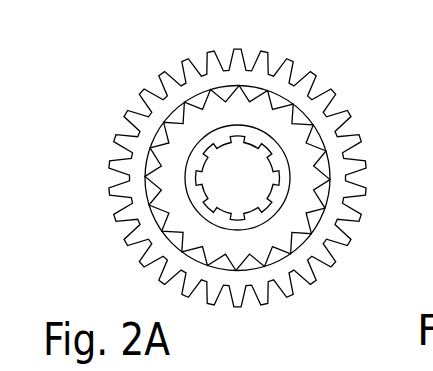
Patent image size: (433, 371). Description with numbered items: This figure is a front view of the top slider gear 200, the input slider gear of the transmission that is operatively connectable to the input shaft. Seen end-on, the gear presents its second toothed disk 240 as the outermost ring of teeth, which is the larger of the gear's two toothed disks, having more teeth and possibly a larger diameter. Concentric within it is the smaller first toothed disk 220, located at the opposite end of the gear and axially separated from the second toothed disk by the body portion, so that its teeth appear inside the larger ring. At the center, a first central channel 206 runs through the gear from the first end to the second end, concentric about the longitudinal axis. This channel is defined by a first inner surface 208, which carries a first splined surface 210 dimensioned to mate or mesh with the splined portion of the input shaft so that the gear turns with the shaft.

The top slider gear 200 is at (88, 63).
The second toothed disk 240 is at (163, 75).
The first toothed disk 220 is at (280, 97).
The first splined surface 210 is at (280, 145).
The first inner surface 208 is at (280, 167).
The first central channel 206 is at (254, 196).